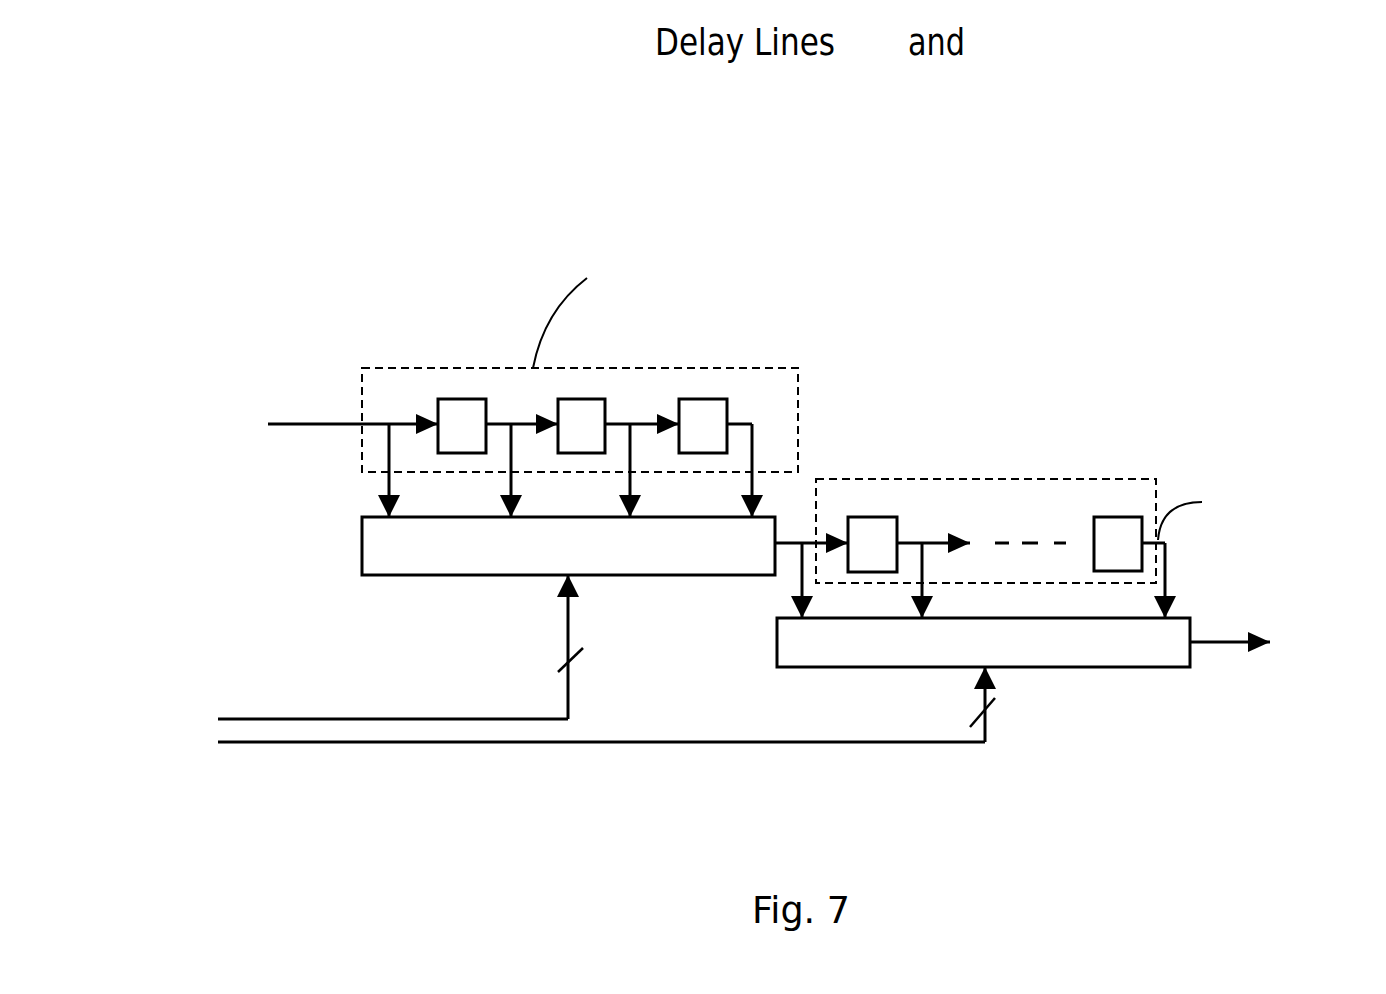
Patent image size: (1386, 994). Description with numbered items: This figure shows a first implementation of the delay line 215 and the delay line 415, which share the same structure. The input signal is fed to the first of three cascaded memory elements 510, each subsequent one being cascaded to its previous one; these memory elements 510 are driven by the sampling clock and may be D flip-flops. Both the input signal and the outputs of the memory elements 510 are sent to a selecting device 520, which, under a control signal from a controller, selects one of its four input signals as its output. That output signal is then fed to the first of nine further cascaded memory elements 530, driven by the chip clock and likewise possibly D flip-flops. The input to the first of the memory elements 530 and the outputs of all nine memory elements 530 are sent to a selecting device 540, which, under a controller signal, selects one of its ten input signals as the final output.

The delay line 215 is at (898, 63).
The delay line 415 is at (1030, 63).
The memory elements 510 is at (732, 372).
The selecting device 520 is at (515, 577).
The memory elements 530 is at (1150, 491).
The selecting device 540 is at (870, 668).